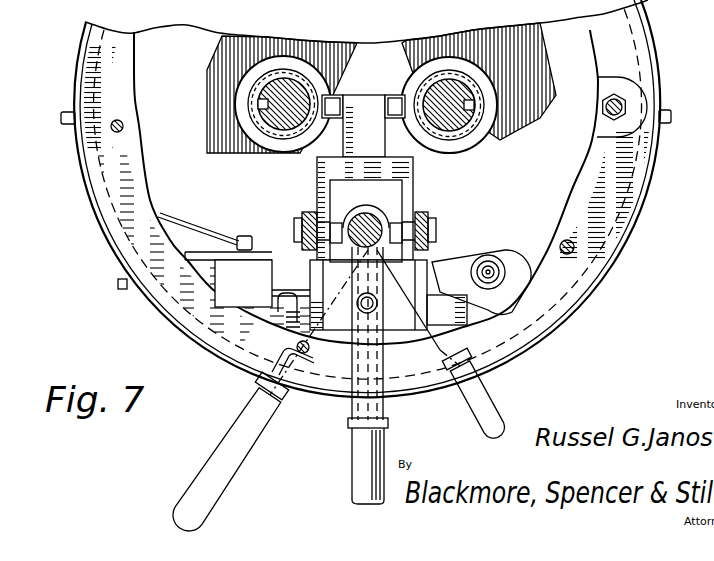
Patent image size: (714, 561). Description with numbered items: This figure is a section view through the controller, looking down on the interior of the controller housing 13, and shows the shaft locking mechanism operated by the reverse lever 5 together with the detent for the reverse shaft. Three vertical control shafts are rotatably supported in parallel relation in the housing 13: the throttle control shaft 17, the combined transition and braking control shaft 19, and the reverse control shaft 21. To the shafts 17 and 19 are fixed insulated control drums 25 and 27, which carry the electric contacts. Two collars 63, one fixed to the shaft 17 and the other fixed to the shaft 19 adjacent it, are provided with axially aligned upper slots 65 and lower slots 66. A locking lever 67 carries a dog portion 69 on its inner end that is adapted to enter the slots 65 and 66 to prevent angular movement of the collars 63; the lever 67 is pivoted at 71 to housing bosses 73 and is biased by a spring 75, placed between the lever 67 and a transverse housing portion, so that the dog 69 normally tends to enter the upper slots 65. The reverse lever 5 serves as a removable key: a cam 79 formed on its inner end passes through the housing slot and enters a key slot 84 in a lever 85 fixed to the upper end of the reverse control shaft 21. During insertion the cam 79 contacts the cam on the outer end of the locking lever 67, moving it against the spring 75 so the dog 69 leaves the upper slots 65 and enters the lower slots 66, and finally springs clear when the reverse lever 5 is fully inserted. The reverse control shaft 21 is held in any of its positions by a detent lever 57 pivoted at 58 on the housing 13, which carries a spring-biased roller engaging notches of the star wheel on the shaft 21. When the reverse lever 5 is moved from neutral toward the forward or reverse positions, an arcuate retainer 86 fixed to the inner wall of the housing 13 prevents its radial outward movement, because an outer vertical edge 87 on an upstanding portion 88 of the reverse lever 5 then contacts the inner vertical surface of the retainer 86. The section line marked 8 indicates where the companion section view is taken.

The reverse lever 5 is at (353, 467).
The section line 8 is at (390, 17).
The controller housing 13 is at (653, 170).
The throttle control shaft 17 is at (450, 114).
The combined transition and braking control shaft 19 is at (280, 122).
The reverse control shaft 21 is at (381, 213).
The insulated control drum 25 is at (537, 107).
The insulated control drum 27 is at (219, 127).
The detent lever 57 is at (477, 261).
The pivot 58 is at (502, 263).
The collars 63 is at (287, 152).
The upper slots 65 is at (342, 93).
The lower slots 66 is at (387, 102).
The locking lever 67 is at (407, 167).
The dog portion 69 is at (403, 103).
The pivot 71 is at (295, 225).
The housing bosses 73 is at (295, 236).
The spring 75 is at (374, 306).
The cam 79 is at (372, 283).
The key slot 84 is at (367, 212).
The lever 85 is at (395, 187).
The arcuate retainer 86 is at (423, 394).
The outer vertical edge 87 is at (343, 397).
The upstanding portion 88 is at (384, 392).